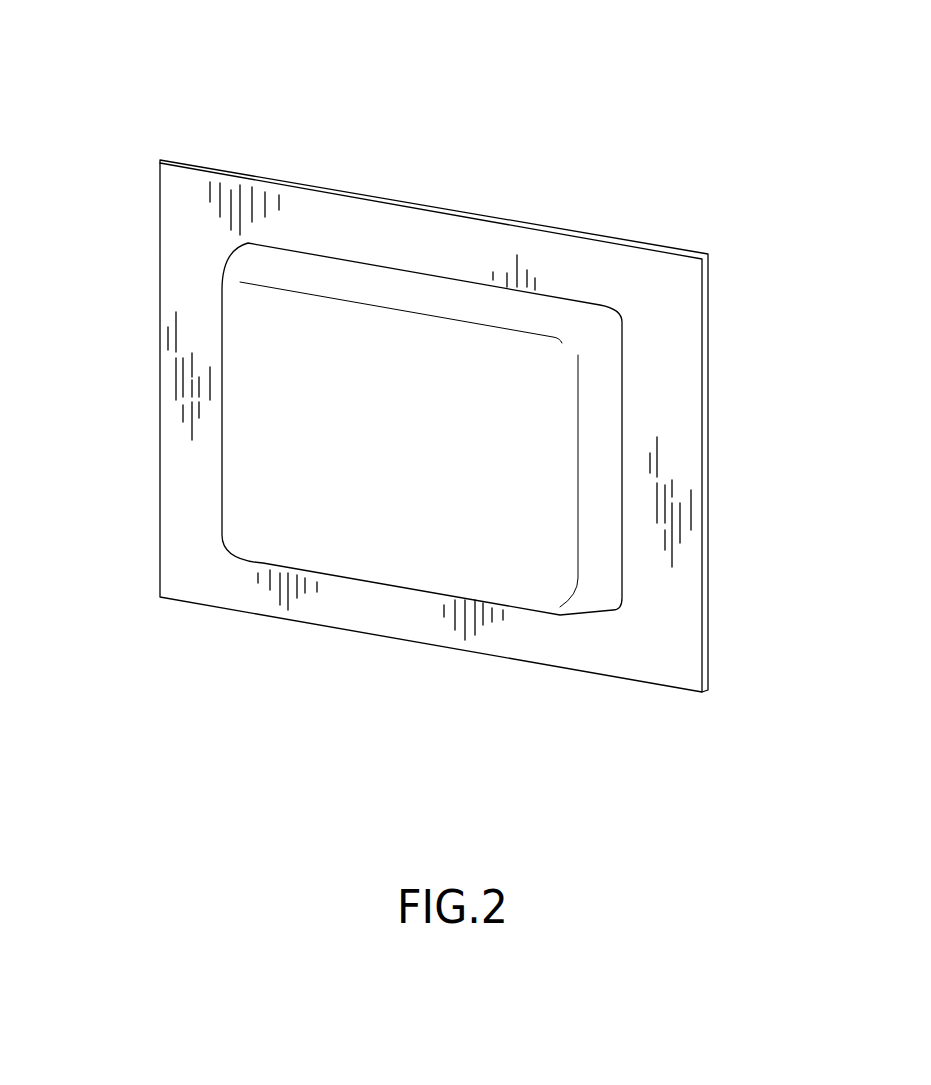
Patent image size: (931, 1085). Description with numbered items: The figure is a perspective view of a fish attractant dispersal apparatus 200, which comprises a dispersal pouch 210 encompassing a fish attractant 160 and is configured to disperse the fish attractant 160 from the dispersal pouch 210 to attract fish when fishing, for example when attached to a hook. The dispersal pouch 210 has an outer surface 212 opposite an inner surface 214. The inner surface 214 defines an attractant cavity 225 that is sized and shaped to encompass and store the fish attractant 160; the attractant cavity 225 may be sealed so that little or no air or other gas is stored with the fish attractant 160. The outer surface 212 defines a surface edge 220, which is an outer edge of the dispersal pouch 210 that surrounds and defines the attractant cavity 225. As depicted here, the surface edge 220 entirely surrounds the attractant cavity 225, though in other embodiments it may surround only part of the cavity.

The fish attractant dispersal apparatus 200 is at (191, 90).
The dispersal pouch 210 is at (114, 277).
The surface edge 220 is at (673, 272).
The outer surface 212 is at (317, 231).
The inner surface 214 is at (388, 277).
The attractant cavity 225 is at (446, 300).
The fish attractant 160 is at (565, 427).